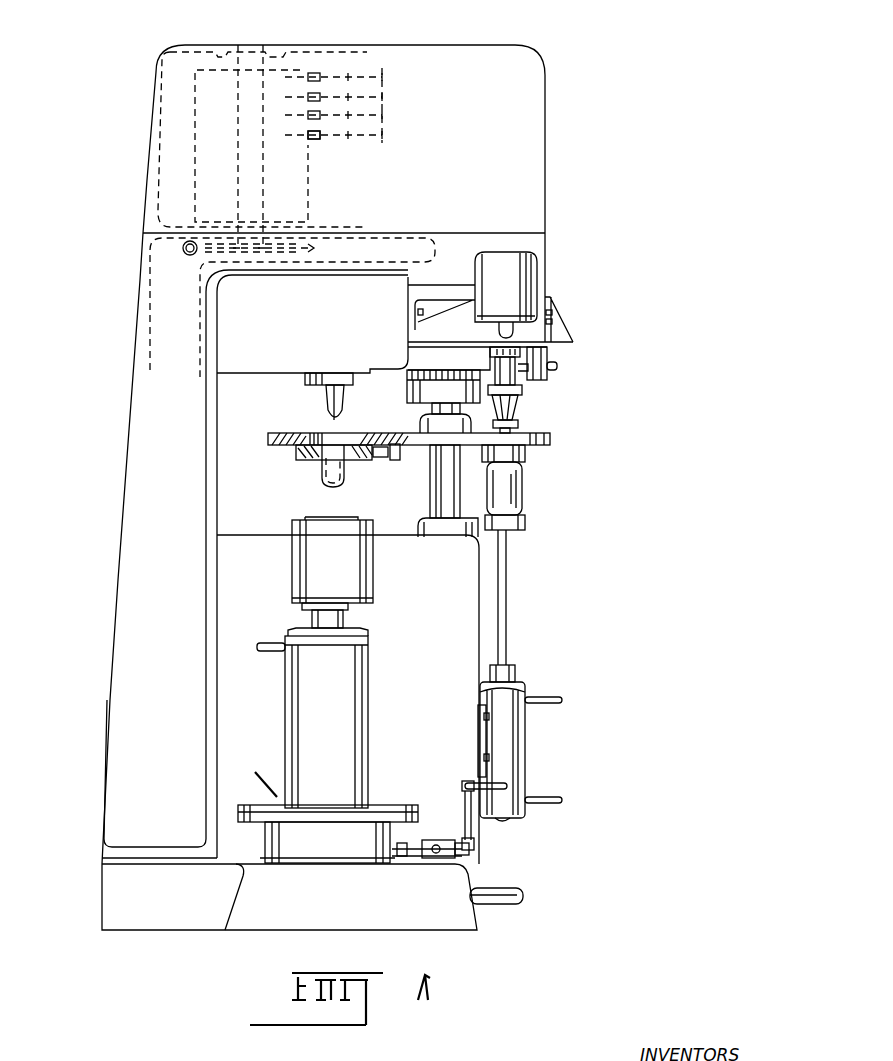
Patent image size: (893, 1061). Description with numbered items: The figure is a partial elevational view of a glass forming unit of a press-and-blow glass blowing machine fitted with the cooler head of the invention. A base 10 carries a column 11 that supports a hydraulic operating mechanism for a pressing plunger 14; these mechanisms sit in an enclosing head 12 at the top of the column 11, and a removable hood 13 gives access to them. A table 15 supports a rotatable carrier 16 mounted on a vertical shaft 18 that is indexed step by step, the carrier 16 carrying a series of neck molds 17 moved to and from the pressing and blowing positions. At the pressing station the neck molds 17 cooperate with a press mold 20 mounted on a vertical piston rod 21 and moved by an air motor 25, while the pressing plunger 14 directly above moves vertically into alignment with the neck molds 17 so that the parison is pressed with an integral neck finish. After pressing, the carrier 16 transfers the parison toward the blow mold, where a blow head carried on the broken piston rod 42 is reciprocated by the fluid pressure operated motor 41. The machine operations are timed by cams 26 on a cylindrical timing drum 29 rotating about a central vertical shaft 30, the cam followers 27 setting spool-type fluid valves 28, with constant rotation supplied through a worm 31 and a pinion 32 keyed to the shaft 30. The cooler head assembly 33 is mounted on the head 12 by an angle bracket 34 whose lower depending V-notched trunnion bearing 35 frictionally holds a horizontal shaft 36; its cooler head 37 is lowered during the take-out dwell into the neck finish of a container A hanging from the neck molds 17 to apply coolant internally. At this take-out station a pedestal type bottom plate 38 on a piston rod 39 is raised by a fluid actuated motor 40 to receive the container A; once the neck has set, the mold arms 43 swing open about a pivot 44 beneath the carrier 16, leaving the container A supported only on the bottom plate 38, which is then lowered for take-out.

The base 10 is at (265, 917).
The column 11 is at (140, 542).
The enclosing head 12 is at (143, 205).
The removable hood 13 is at (532, 159).
The pressing plunger 14 is at (333, 393).
The table 15 is at (436, 612).
The rotatable carrier 16 is at (272, 437).
The neck molds 17 is at (296, 452).
The vertical shaft 18 is at (443, 402).
The press mold 20 is at (338, 561).
The vertical piston rod 21 is at (320, 612).
The air motor 25 is at (336, 719).
The cams 26 is at (305, 143).
The cam followers 27 is at (302, 120).
The spool-type fluid valves 28 is at (384, 116).
The cylindrical timing drum 29 is at (292, 210).
The central vertical shaft 30 is at (257, 48).
The worm 31 is at (188, 258).
The pinion 32 is at (318, 248).
The cooler head assembly 33 is at (520, 402).
The angle bracket 34 is at (573, 325).
The trunnion bearing 35 is at (530, 385).
The horizontal shaft 36 is at (557, 366).
The cooler head 37 is at (522, 428).
The bottom plate 38 is at (527, 522).
The piston rod 39 is at (507, 605).
The fluid actuated motor 40 is at (518, 744).
The fluid pressure operated motor 41 is at (523, 268).
The piston rod 42 is at (497, 332).
The arms 43 is at (378, 460).
The pivot 44 is at (398, 461).
The container A is at (515, 483).